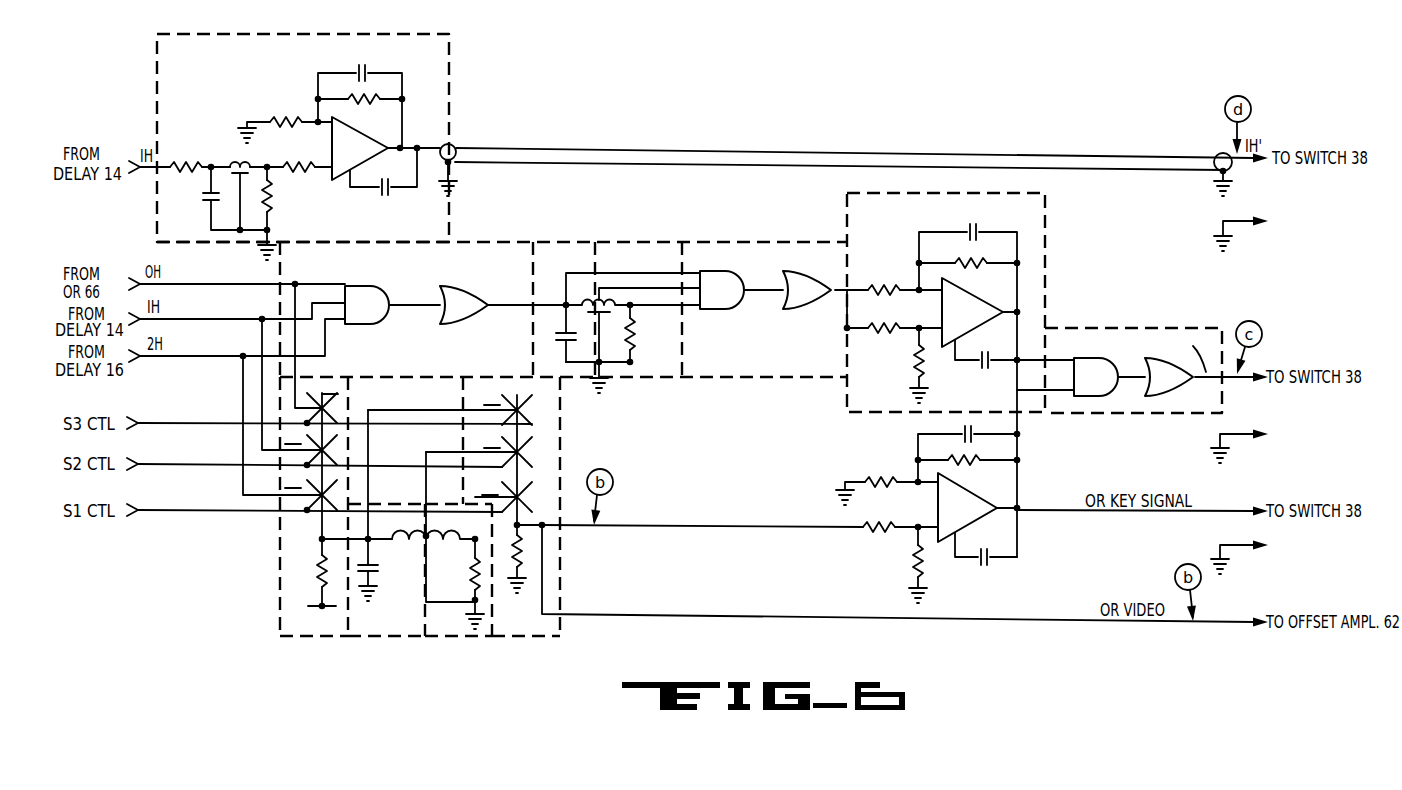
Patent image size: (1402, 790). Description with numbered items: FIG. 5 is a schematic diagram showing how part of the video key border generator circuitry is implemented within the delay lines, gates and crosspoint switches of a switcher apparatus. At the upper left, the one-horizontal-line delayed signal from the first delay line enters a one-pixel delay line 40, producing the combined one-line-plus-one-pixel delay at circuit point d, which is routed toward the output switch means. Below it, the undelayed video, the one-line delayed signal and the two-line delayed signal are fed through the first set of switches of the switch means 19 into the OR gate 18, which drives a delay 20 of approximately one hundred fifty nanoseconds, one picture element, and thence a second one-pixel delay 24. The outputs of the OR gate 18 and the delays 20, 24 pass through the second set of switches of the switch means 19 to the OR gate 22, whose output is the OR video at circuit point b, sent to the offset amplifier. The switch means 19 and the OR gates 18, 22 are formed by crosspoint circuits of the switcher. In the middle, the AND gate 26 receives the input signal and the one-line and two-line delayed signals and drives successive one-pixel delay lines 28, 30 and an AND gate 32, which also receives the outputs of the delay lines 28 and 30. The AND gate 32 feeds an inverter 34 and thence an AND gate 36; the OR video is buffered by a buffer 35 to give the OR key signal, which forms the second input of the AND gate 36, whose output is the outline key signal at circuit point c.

The OR gate 18 is at (285, 592).
The switch means 19 is at (285, 556).
The delay 20 is at (385, 619).
The OR gate 22 is at (535, 486).
The 1p delay 24 is at (442, 579).
The AND gate 26 is at (399, 276).
The 1p delay line 28 is at (543, 266).
The 1p delay line 30 is at (646, 341).
The AND gate 32 is at (754, 342).
The inverter 34 is at (869, 377).
The buffer 35 is at (977, 488).
The AND gate 36 is at (1119, 404).
The 1p delay line 40 is at (208, 92).